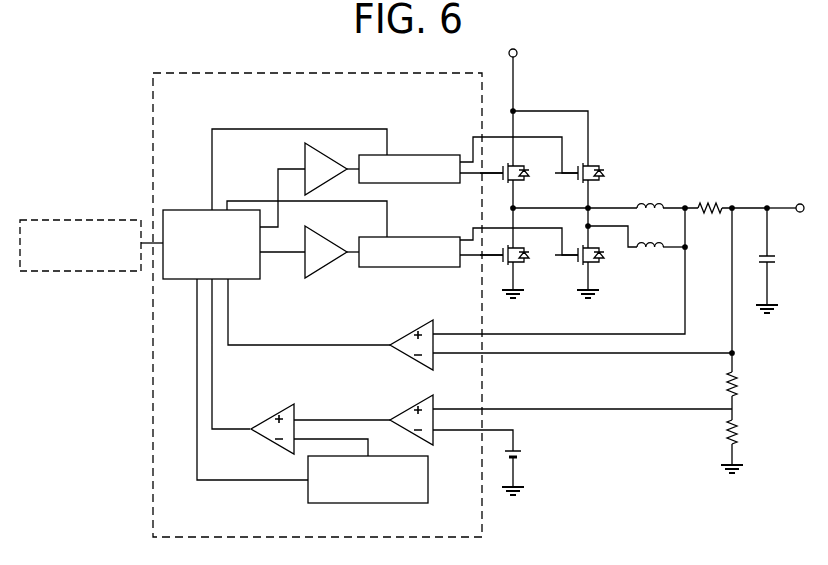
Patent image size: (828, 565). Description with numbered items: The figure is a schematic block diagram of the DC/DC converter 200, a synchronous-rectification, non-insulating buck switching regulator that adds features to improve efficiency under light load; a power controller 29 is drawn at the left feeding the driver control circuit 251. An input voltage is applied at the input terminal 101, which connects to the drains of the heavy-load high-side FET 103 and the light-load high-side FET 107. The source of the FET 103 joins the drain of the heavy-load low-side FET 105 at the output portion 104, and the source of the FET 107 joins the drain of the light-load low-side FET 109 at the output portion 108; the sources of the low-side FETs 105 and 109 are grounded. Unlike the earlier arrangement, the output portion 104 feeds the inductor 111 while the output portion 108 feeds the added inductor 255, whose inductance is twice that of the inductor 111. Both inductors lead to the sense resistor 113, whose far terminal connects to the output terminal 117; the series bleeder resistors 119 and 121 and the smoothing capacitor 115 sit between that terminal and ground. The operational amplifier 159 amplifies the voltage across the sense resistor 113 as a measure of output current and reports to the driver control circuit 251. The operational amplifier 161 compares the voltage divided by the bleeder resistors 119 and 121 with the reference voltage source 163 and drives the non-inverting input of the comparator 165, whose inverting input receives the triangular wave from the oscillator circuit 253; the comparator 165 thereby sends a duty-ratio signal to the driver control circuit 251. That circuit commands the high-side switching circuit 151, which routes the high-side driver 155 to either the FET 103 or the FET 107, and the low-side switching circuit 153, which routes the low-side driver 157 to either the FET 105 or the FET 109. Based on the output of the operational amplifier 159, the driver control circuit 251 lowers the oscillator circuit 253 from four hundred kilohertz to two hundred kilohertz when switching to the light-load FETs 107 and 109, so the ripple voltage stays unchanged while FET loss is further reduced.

The DC/DC converter 200 is at (94, 72).
The power controller 29 is at (95, 220).
The driver control circuit 251 is at (184, 210).
The high-side driver 155 is at (305, 157).
The low-side driver 157 is at (330, 241).
The high-side switching circuit 151 is at (413, 155).
The low-side switching circuit 153 is at (447, 267).
The input terminal 101 is at (518, 55).
The heavy-load high-side FET 103 is at (529, 178).
The heavy-load low-side FET 105 is at (529, 262).
The light-load high-side FET 107 is at (603, 168).
The light-load low-side FET 109 is at (604, 262).
The output portion 104 is at (510, 208).
The output portion 108 is at (589, 225).
The inductor 111 is at (658, 205).
The inductor 255 is at (651, 252).
The sense resistor 113 is at (712, 205).
The smoothing capacitor 115 is at (775, 261).
The output terminal 117 is at (798, 204).
The bleeder resistor 119 is at (734, 375).
The bleeder resistor 121 is at (734, 428).
The operational amplifier 159 is at (410, 332).
The operational amplifier 161 is at (410, 407).
The comparator 165 is at (295, 403).
The reference voltage source 163 is at (522, 451).
The oscillator circuit 253 is at (308, 492).